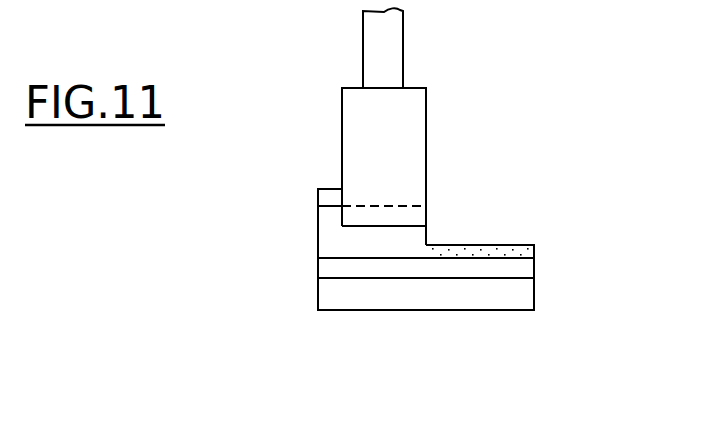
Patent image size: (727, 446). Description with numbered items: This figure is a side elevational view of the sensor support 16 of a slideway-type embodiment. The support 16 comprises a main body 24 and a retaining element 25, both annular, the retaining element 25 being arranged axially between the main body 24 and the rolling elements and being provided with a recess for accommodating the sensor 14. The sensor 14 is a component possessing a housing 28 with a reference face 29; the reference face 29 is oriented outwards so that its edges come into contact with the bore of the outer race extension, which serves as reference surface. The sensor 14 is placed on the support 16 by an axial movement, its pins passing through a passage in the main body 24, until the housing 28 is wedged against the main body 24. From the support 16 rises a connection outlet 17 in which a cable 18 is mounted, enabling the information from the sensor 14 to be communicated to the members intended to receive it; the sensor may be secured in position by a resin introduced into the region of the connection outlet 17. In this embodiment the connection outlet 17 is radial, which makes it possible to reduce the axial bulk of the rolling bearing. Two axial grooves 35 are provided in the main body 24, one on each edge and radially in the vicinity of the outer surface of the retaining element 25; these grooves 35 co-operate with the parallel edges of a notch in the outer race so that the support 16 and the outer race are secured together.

The cable 18 is at (378, 46).
The connection outlet 17 is at (368, 140).
The main body 24 is at (330, 215).
The axial grooves 35 is at (370, 243).
The housing 28 is at (475, 252).
The reference face 29 is at (504, 244).
The sensor 14 is at (531, 242).
The support 16 is at (538, 272).
The retaining element 25 is at (503, 288).